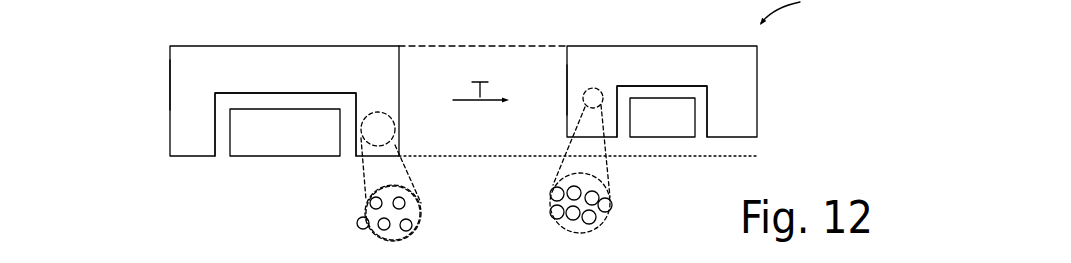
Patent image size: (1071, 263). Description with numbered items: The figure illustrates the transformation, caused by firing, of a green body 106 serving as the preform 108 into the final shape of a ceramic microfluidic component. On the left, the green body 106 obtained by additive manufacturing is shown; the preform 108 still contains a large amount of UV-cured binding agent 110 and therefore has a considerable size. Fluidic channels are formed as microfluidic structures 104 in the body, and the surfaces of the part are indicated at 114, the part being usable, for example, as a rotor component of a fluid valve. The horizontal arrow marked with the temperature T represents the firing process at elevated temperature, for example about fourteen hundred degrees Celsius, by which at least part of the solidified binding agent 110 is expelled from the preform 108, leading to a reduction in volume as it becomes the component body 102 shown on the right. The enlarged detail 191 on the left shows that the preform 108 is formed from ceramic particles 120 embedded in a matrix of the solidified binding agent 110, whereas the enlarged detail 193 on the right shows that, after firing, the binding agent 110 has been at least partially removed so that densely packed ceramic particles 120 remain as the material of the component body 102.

The component body 102 is at (727, 123).
The microfluidic structures 104 is at (243, 100).
The green body 106 is at (153, 129).
The preform 108 is at (405, 93).
The binding agent 110 is at (410, 208).
The rotor component 114 is at (145, 75).
The ceramic particles 120 is at (367, 205).
The detail 191 is at (428, 196).
The detail 193 is at (546, 174).